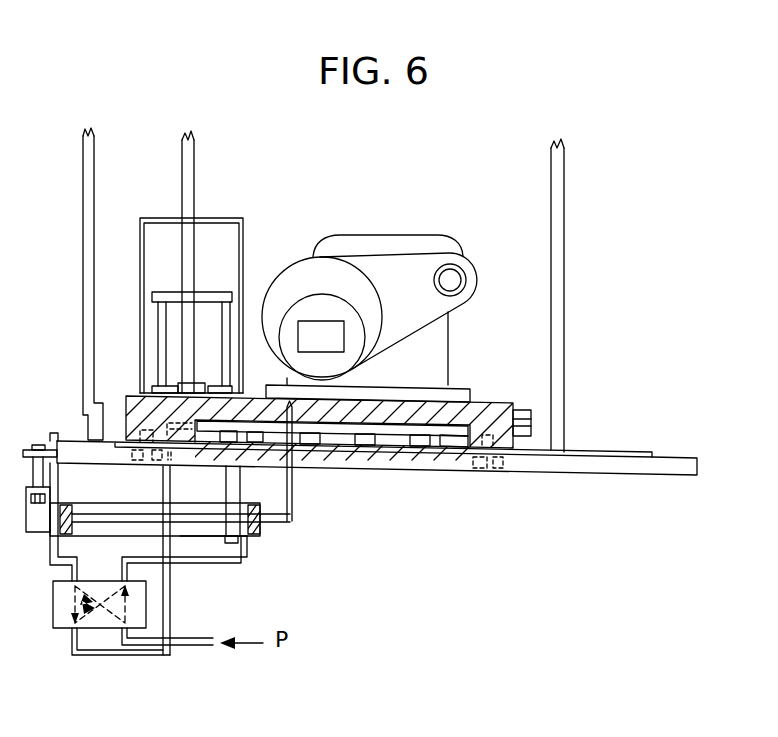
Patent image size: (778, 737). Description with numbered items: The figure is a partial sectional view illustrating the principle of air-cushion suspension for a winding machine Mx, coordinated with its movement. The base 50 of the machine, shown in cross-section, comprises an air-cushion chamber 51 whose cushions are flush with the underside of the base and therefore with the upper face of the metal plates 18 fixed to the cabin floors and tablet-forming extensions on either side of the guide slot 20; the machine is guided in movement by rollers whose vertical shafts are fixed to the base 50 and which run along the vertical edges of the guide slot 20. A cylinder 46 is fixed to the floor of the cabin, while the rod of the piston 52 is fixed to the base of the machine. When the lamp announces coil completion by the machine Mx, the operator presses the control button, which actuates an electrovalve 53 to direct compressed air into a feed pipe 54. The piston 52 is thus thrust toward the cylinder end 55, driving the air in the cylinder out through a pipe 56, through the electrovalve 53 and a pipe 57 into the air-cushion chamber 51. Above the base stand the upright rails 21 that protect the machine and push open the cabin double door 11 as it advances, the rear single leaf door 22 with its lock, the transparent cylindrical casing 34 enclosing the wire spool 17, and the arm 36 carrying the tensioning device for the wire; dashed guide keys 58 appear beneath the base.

The cabin double door 11 is at (563, 186).
The wire spool 17 is at (222, 296).
The metal plates 18 is at (583, 450).
The guide slot 20 is at (608, 466).
The rail 21 is at (532, 424).
The single leaf door 22 is at (88, 200).
The transparent cylindrical casing 34 is at (158, 218).
The arm 36 is at (190, 172).
The cylinder 46 is at (200, 537).
The base of the winding machine 50 is at (490, 407).
The air-cushion chamber 51 is at (386, 433).
The piston 52 is at (66, 503).
The electrovalve 53 is at (53, 605).
The feed pipe 54 is at (50, 542).
The cylinder end 55 is at (262, 528).
The pipe 56 is at (250, 550).
The pipe 57 is at (120, 657).
The guide keys 58 is at (500, 466).
The machine Mx is at (398, 232).